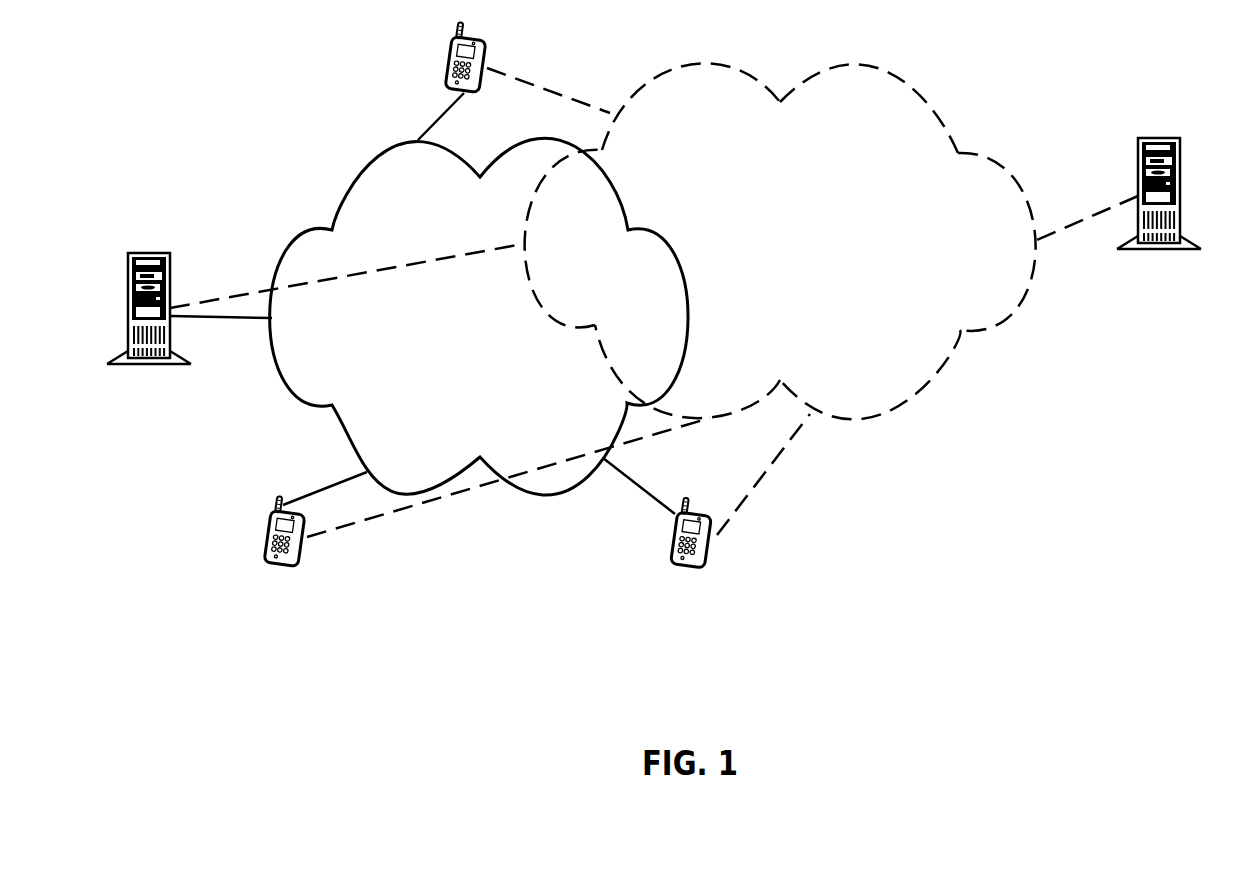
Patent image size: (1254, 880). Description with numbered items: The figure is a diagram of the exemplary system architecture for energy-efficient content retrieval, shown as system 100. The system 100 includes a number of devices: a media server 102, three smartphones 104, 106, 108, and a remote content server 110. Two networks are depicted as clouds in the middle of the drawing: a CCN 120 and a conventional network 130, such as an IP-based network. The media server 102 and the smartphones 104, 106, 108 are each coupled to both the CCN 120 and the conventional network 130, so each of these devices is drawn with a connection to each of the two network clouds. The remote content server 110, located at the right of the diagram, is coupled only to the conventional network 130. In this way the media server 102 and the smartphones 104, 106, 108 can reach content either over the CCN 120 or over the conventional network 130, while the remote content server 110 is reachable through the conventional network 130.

The system 100 is at (663, 701).
The media server 102 is at (130, 254).
The smartphone 104 is at (447, 55).
The smartphone 106 is at (272, 556).
The smartphone 108 is at (678, 562).
The remote content server 110 is at (1180, 192).
The CCN 120 is at (479, 316).
The conventional network 130 is at (780, 241).